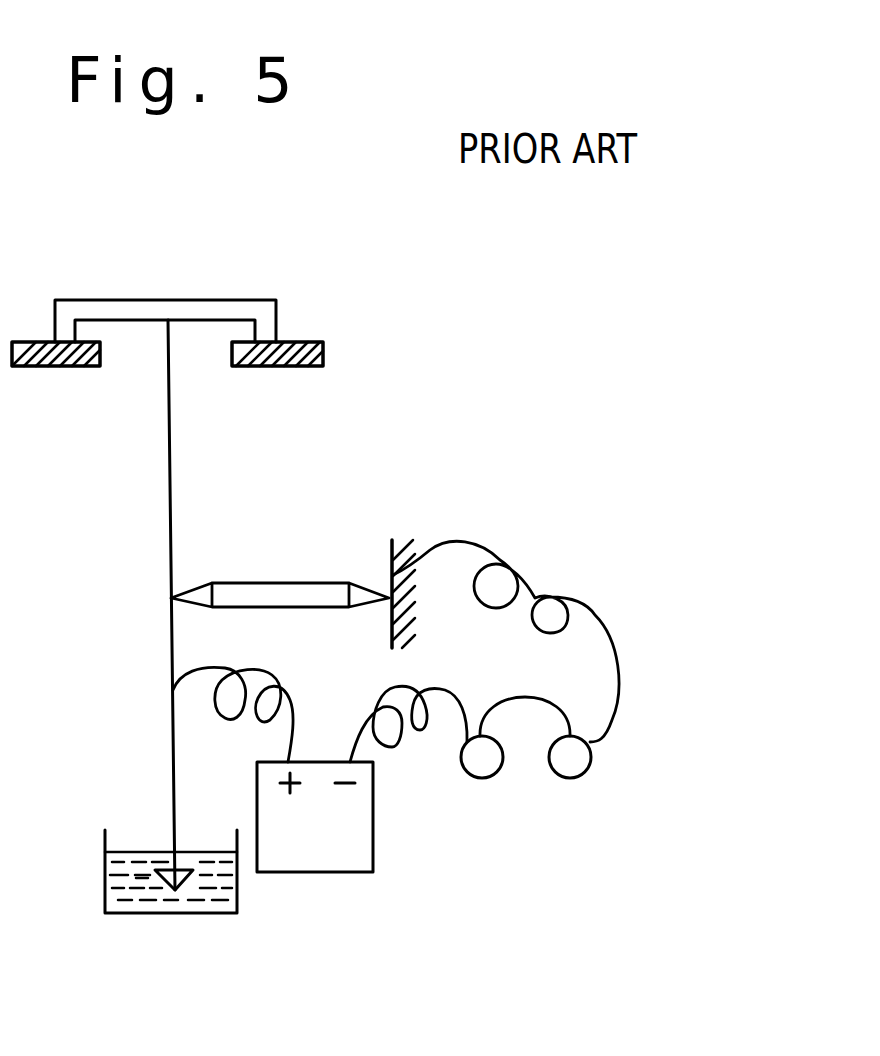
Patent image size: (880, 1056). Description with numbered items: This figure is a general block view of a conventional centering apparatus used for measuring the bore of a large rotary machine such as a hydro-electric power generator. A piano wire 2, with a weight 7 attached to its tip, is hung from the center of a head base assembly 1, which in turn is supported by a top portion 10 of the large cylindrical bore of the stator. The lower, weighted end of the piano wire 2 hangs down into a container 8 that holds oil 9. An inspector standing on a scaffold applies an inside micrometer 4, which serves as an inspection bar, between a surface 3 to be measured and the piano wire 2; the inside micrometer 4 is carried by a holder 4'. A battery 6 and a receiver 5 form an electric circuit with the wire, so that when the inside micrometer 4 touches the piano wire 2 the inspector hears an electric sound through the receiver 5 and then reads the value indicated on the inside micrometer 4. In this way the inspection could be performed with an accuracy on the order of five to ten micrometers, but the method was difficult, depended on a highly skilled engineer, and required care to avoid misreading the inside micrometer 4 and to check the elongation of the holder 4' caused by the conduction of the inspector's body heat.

The head base assembly 1 is at (85, 300).
The top portion 10 is at (323, 350).
The piano wire 2 is at (173, 739).
The surface 3 is at (390, 556).
The inside micrometer 4 is at (280, 534).
The holder 4' is at (280, 638).
The receiver 5 is at (485, 778).
The battery 6 is at (373, 860).
The weight 7 is at (182, 888).
The container 8 is at (133, 913).
The oil 9 is at (141, 878).